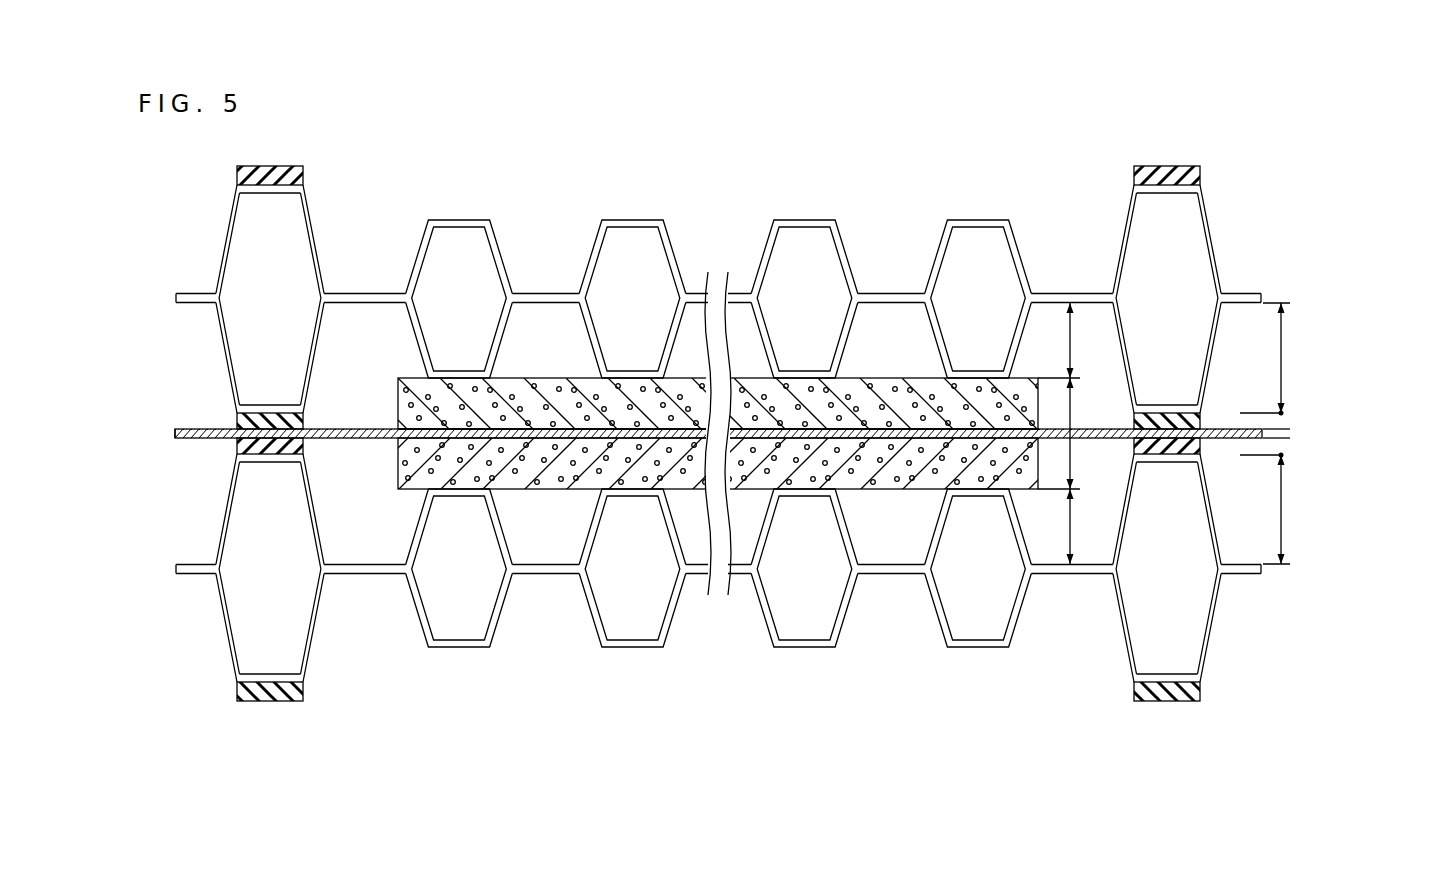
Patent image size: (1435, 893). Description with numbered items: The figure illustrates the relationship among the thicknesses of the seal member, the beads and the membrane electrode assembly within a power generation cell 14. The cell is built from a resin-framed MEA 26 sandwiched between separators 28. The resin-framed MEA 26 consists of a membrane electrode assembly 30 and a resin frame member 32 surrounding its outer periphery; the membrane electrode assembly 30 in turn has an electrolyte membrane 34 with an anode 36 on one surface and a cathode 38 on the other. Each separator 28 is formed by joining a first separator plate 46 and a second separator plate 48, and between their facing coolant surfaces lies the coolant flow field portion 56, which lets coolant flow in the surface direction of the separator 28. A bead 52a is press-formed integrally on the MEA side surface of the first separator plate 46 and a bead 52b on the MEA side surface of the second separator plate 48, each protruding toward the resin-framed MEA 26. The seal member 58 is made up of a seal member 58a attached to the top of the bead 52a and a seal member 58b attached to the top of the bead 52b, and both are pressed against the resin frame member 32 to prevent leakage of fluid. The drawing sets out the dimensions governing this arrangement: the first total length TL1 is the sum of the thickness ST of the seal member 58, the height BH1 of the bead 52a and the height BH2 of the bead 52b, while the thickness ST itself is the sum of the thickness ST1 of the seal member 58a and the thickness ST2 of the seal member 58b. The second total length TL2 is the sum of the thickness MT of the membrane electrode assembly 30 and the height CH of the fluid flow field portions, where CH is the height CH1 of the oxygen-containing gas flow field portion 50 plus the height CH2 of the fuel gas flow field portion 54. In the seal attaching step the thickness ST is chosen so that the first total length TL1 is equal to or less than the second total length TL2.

The power generation cell 14 is at (962, 107).
The resin-framed MEA 26 is at (174, 425).
The separator 28 is at (176, 287).
The membrane electrode assembly 30 is at (687, 465).
The resin frame member 32 is at (333, 440).
The electrolyte membrane 34 is at (460, 430).
The anode 36 is at (398, 414).
The cathode 38 is at (398, 463).
The first separator plate 46 is at (180, 292).
The second separator plate 48 is at (193, 305).
The oxygen-containing gas flow field portion 50 is at (557, 534).
The bead 52a is at (228, 222).
The bead 52b is at (228, 372).
The fuel gas flow field portion 54 is at (557, 364).
The coolant flow field portion 56 is at (473, 296).
The seal member 58 is at (318, 404).
The seal member 58a is at (274, 165).
The seal member 58b is at (268, 412).
The second total length TL2 is at (1008, 140).
The height of the fluid flow field portions CH is at (1067, 192).
The height of the oxygen-containing gas flow field portion CH1 is at (1070, 517).
The height of the fuel gas flow field portion CH2 is at (1071, 333).
The thickness of the membrane electrode assembly MT is at (1068, 406).
The height of the bead 52b BH2 is at (1281, 368).
The height of the bead 52a BH1 is at (1281, 498).
The thickness of the seal member ST is at (1343, 393).
The thickness of the seal member 58b ST2 is at (1281, 414).
The thickness of the seal member 58a ST1 is at (1281, 455).
The first total length TL1 is at (1383, 345).